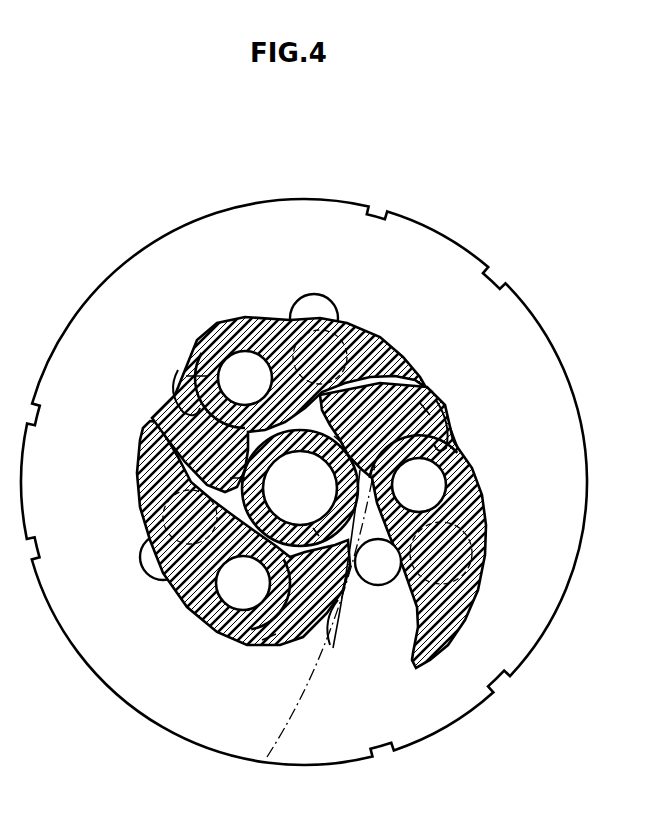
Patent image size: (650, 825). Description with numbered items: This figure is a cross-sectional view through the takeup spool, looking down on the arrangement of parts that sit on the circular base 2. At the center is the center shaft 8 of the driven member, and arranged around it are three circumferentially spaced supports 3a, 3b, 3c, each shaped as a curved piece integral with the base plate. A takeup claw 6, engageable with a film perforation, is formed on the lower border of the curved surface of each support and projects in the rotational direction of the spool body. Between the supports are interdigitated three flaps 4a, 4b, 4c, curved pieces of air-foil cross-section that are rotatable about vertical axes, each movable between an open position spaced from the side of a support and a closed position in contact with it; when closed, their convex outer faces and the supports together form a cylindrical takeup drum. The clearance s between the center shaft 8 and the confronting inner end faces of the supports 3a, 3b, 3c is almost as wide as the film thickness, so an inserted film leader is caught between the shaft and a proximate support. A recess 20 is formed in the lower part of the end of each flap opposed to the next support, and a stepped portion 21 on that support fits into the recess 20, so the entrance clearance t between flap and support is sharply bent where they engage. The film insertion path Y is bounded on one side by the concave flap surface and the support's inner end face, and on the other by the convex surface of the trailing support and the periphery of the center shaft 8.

The circular base 2 is at (556, 553).
The support 3a is at (334, 616).
The support 3b is at (180, 400).
The support 3c is at (438, 433).
The flap 4a is at (470, 551).
The flap 4b is at (173, 575).
The flap 4c is at (362, 350).
The takeup claw 6 is at (312, 665).
The center shaft 8 is at (267, 505).
The recess 20 is at (474, 481).
The stepped portion 21 is at (452, 448).
The clearance s is at (240, 476).
The clearance t is at (267, 650).
The film insertion path Y is at (321, 613).